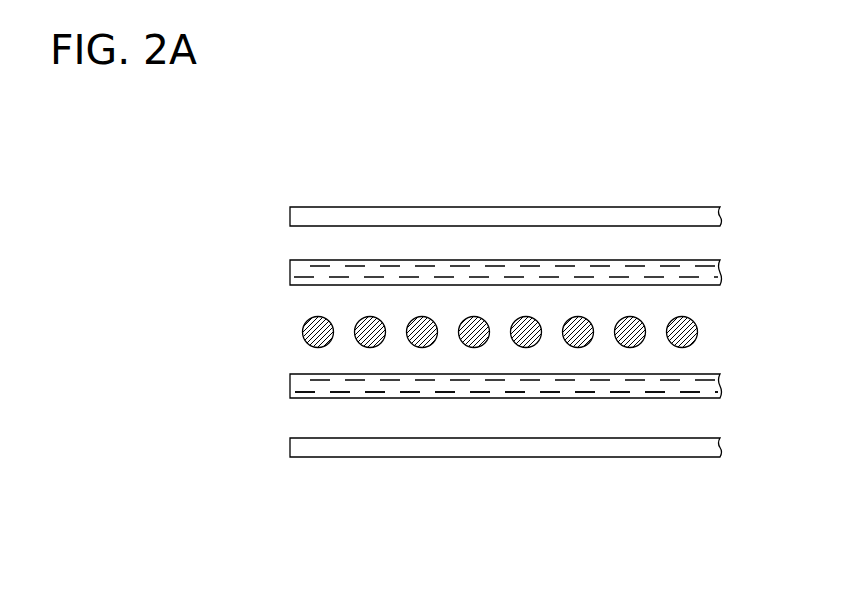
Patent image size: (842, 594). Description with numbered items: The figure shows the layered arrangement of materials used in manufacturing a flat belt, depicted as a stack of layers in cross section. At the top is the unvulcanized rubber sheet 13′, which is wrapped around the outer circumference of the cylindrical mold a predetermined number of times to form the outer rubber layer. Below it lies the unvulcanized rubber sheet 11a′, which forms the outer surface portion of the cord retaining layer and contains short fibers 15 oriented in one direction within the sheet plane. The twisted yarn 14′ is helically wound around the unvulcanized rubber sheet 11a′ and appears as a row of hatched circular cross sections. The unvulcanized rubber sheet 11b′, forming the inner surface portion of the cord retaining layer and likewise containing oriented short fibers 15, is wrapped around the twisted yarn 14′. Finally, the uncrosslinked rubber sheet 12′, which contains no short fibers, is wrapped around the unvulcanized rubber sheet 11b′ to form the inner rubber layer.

The unvulcanized rubber sheet 13′ is at (293, 218).
The unvulcanized rubber sheet 11a′ is at (293, 276).
The twisted yarn 14′ is at (302, 333).
The unvulcanized rubber sheet 11b′ is at (293, 389).
The uncrosslinked rubber sheet 12′ is at (293, 447).
The short fibers 15 is at (479, 392).